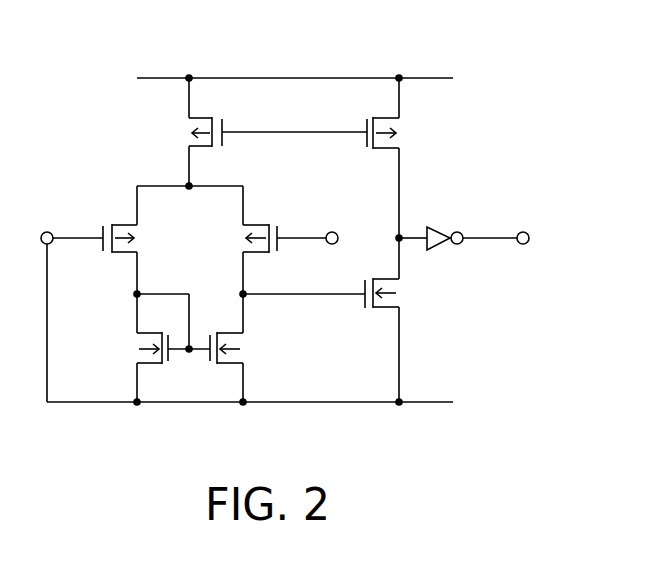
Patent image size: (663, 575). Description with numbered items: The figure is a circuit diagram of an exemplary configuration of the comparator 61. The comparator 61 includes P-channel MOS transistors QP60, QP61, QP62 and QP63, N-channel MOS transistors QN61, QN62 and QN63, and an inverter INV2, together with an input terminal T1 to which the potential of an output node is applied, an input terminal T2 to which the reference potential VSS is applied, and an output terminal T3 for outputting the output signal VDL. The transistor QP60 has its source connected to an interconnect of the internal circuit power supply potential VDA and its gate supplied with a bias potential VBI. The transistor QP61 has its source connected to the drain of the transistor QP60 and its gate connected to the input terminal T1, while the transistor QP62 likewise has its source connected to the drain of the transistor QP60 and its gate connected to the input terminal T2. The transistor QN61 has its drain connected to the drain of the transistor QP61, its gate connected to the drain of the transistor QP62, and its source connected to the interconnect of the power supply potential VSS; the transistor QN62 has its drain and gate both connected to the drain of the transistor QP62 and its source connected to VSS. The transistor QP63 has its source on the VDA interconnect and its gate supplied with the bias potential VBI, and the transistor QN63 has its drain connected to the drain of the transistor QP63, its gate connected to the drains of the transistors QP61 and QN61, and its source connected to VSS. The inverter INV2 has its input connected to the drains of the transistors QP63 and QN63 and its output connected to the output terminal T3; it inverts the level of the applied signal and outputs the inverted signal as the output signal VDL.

The comparator 61 is at (204, 29).
The P-channel MOS transistor QP60 is at (173, 132).
The P-channel MOS transistor QP61 is at (277, 240).
The P-channel MOS transistor QP62 is at (104, 240).
The P-channel MOS transistor QP63 is at (417, 178).
The N-channel MOS transistor QN61 is at (262, 348).
The N-channel MOS transistor QN62 is at (140, 348).
The N-channel MOS transistor QN63 is at (418, 340).
The inverter INV2 is at (429, 226).
The input terminal T1 is at (324, 238).
The input terminal T2 is at (54, 314).
The output terminal T3 is at (539, 238).
The internal circuit power supply potential VDA is at (295, 67).
The bias potential VBI is at (294, 120).
The output signal VDL is at (490, 226).
The power supply potential VSS is at (250, 418).